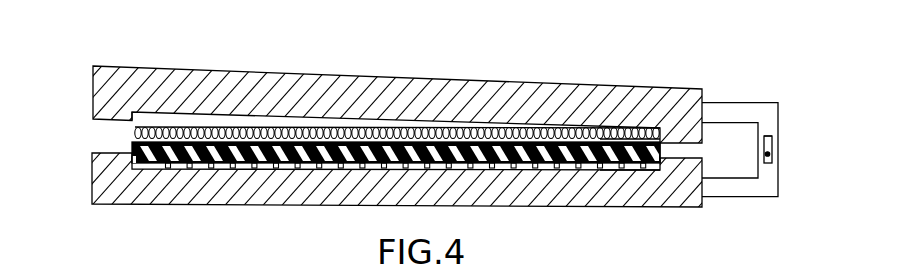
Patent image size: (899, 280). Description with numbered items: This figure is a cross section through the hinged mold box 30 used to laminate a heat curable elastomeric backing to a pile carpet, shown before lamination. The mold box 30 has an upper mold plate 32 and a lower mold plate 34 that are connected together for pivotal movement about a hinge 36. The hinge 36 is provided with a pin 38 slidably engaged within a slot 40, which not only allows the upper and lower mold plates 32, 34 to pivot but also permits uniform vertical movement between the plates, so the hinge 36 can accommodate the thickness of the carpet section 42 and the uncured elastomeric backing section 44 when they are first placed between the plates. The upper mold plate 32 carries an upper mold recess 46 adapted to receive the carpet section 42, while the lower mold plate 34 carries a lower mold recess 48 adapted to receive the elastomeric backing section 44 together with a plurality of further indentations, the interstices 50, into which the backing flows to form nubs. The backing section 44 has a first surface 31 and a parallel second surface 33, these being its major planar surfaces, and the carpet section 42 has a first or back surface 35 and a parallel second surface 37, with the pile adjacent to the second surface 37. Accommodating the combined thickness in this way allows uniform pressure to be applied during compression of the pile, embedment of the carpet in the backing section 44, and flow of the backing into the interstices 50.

The mold box 30 is at (77, 64).
The first surface 31 is at (631, 170).
The upper mold plate 32 is at (292, 88).
The second surface 33 is at (645, 164).
The lower mold plate 34 is at (238, 207).
The first or back surface 35 is at (542, 127).
The hinge 36 is at (778, 126).
The second surface 37 is at (613, 136).
The pin 38 is at (772, 152).
The slot 40 is at (766, 136).
The carpet section 42 is at (170, 127).
The uncured elastomeric backing section 44 is at (132, 150).
The upper mold recess 46 is at (140, 115).
The lower mold recess 48 is at (133, 166).
The interstices 50 is at (183, 168).